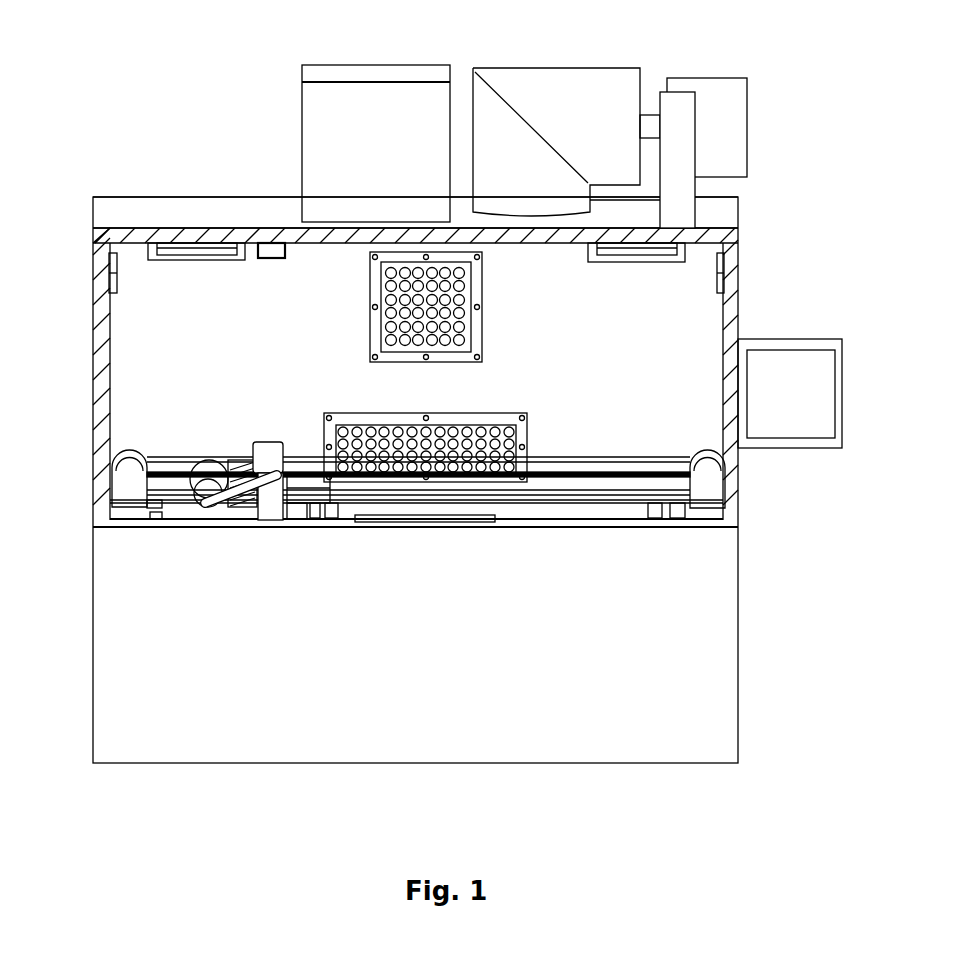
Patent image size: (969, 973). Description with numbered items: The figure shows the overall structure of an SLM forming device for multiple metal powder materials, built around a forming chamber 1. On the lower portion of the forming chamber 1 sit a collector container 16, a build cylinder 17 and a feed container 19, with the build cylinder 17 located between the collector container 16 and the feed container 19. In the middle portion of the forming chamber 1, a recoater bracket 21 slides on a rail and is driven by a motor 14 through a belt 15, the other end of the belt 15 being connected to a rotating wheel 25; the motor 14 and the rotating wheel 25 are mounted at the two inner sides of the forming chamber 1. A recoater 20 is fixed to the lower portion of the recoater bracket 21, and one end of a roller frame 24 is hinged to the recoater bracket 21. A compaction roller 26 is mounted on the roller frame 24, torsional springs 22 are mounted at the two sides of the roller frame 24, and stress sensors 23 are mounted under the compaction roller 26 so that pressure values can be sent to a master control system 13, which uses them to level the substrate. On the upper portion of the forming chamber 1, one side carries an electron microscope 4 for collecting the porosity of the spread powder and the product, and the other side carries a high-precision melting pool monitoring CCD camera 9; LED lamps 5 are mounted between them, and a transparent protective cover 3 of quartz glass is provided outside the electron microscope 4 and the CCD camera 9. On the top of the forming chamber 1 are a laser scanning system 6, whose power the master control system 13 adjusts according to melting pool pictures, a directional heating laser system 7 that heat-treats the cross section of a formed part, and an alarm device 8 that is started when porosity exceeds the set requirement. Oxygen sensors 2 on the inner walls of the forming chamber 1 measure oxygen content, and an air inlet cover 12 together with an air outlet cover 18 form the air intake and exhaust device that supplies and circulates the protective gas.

The forming chamber 1 is at (152, 323).
The oxygen sensors 2 is at (110, 277).
The transparent protective cover 3 is at (125, 232).
The electron microscope 4 is at (178, 243).
The LED lamps 5 is at (273, 247).
The laser scanning system 6 is at (338, 98).
The directional heating laser system 7 is at (540, 88).
The alarm device 8 is at (682, 108).
The high-precision melting pool monitoring CCD camera 9 is at (645, 245).
The air inlet cover 12 is at (482, 418).
The master control system 13 is at (788, 405).
The motor 14 is at (710, 480).
The belt 15 is at (652, 478).
The collector container 16 is at (633, 512).
The build cylinder 17 is at (510, 527).
The air outlet cover 18 is at (427, 527).
The feed container 19 is at (302, 510).
The recoater 20 is at (272, 510).
The recoater bracket 21 is at (258, 522).
The torsional springs 22 is at (228, 516).
The stress sensors 23 is at (192, 518).
The roller frame 24 is at (160, 510).
The rotating wheel 25 is at (130, 470).
The compaction roller 26 is at (188, 460).